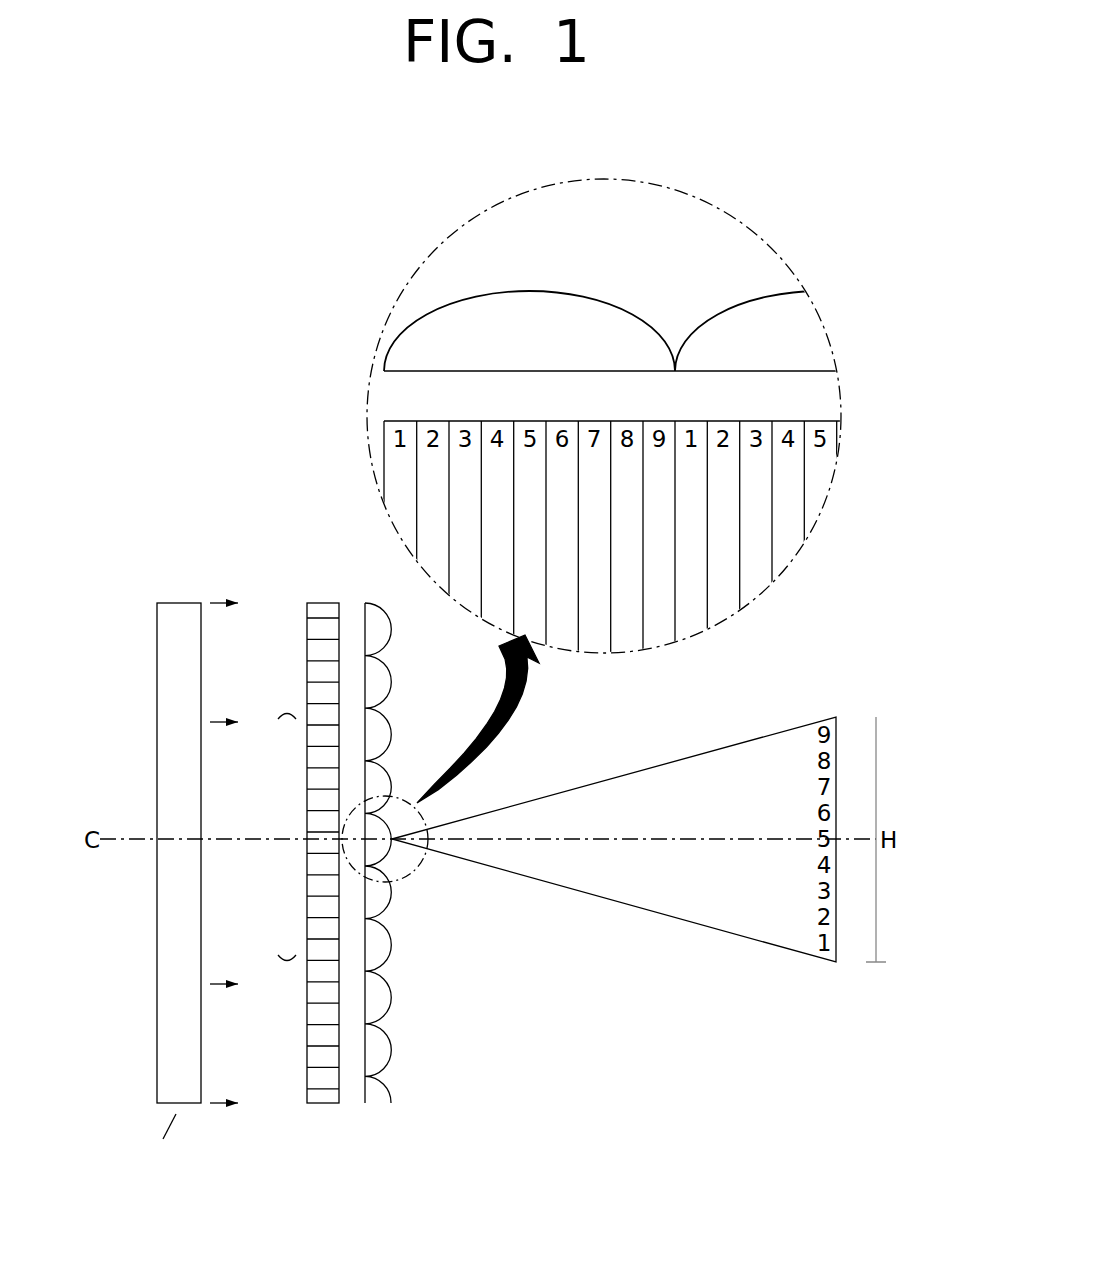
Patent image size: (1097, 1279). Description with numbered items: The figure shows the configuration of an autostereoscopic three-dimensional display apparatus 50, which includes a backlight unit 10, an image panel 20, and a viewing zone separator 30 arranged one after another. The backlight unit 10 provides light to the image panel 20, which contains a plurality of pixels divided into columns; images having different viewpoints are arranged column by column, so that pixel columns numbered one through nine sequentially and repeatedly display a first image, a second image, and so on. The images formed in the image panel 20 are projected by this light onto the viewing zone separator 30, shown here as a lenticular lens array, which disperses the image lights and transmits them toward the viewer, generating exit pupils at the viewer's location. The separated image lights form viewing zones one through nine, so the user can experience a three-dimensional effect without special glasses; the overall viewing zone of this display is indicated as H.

The backlight unit 10 is at (180, 603).
The image panel 20 is at (322, 603).
The viewing zone separator 30 is at (365, 603).
The autostereoscopic 3D display apparatus 50 is at (246, 378).